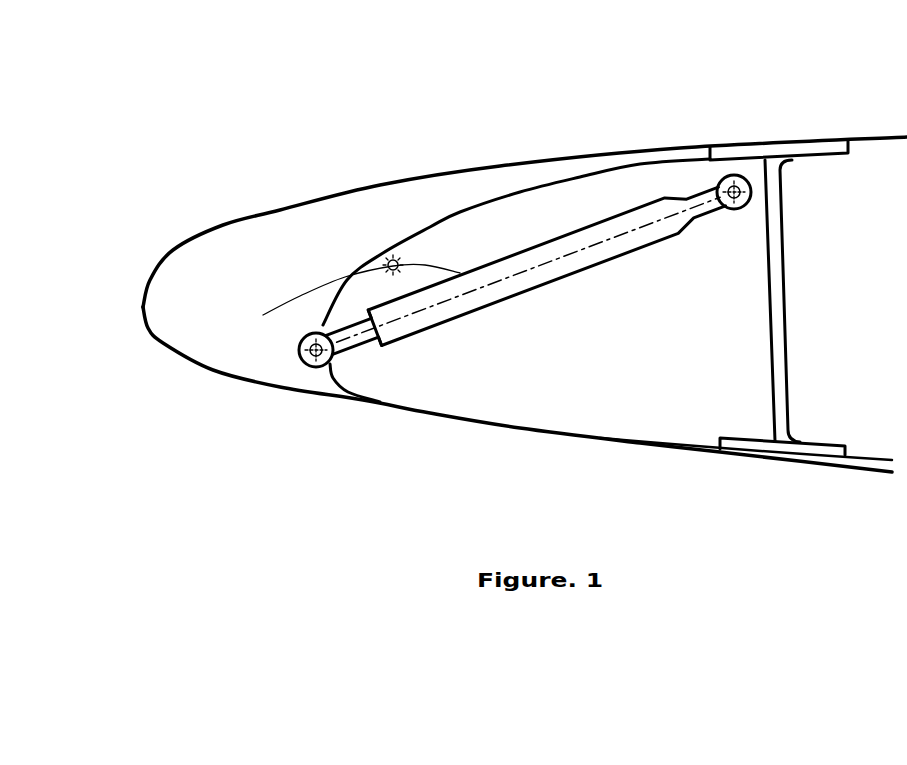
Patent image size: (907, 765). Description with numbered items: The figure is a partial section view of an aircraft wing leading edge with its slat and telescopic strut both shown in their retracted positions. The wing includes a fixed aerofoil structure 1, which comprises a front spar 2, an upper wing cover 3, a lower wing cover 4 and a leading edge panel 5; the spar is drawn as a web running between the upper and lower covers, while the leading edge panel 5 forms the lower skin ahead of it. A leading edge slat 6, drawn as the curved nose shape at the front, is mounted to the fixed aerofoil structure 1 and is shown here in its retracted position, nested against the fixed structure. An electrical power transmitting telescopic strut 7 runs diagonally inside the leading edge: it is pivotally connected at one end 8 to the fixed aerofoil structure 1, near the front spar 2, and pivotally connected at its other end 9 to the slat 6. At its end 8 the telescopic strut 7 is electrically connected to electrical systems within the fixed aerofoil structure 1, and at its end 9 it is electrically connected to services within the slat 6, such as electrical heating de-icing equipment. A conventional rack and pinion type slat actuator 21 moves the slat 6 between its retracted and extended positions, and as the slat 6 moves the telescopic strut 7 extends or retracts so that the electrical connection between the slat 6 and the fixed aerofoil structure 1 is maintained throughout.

The fixed aerofoil structure 1 is at (698, 94).
The front spar 2 is at (778, 305).
The upper wing cover 3 is at (880, 146).
The lower wing cover 4 is at (767, 452).
The leading edge panel 5 is at (520, 429).
The leading edge slat 6 is at (277, 215).
The electrical power transmitting telescopic strut 7 is at (613, 248).
The end of telescopic strut 8 is at (727, 207).
The other end of telescopic strut 9 is at (330, 357).
The slat actuator 21 is at (417, 257).